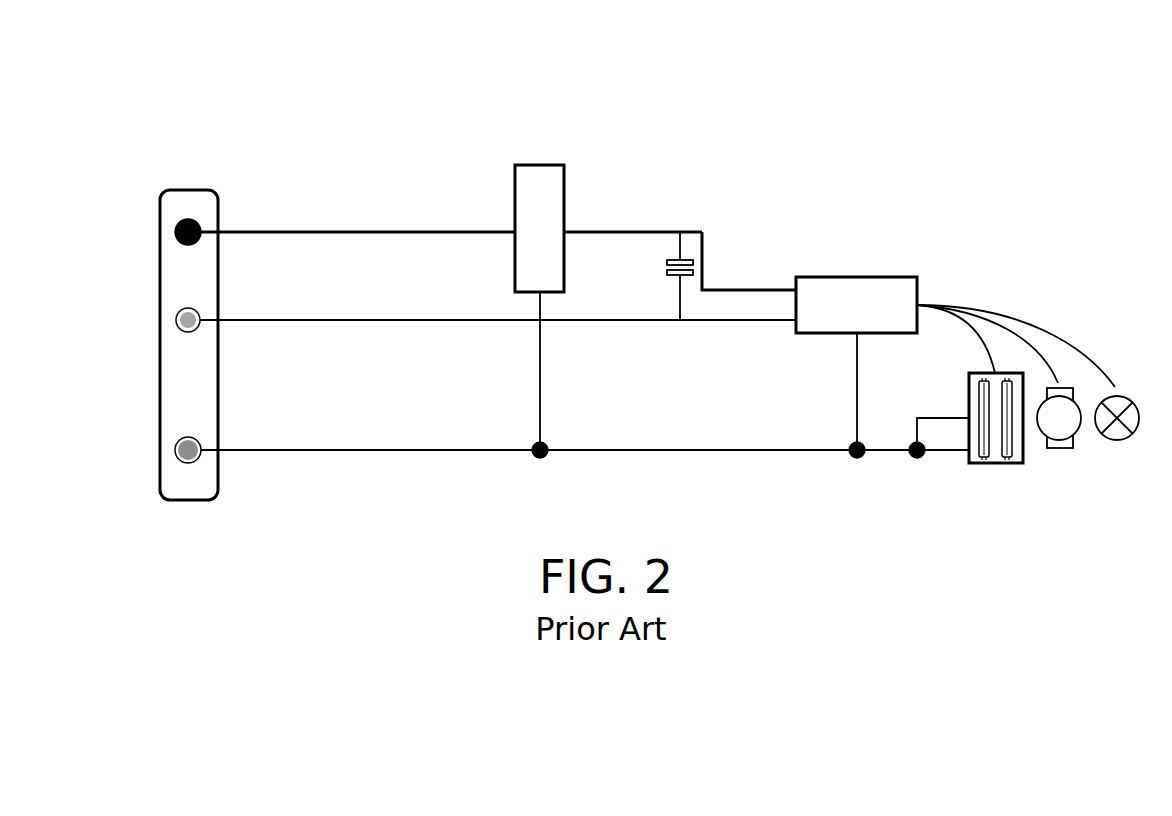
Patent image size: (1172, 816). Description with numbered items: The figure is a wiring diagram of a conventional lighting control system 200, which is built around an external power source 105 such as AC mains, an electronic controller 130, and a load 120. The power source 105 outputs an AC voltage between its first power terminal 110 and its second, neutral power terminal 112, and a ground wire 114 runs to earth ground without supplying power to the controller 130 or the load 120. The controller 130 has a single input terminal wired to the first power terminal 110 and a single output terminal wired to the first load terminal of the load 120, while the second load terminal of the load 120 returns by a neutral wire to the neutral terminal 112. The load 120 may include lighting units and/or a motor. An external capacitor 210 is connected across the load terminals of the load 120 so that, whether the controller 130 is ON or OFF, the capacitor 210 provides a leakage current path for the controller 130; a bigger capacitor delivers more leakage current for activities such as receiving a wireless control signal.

The lighting control system 200 is at (1093, 102).
The external power source 105 is at (163, 378).
The first power terminal 110 is at (498, 249).
The second power terminal (neutral terminal) 112 is at (498, 308).
The ground conductor 114 is at (585, 438).
The electronic controller 130 is at (564, 205).
The external capacitor 210 is at (665, 266).
The load 120 is at (877, 278).